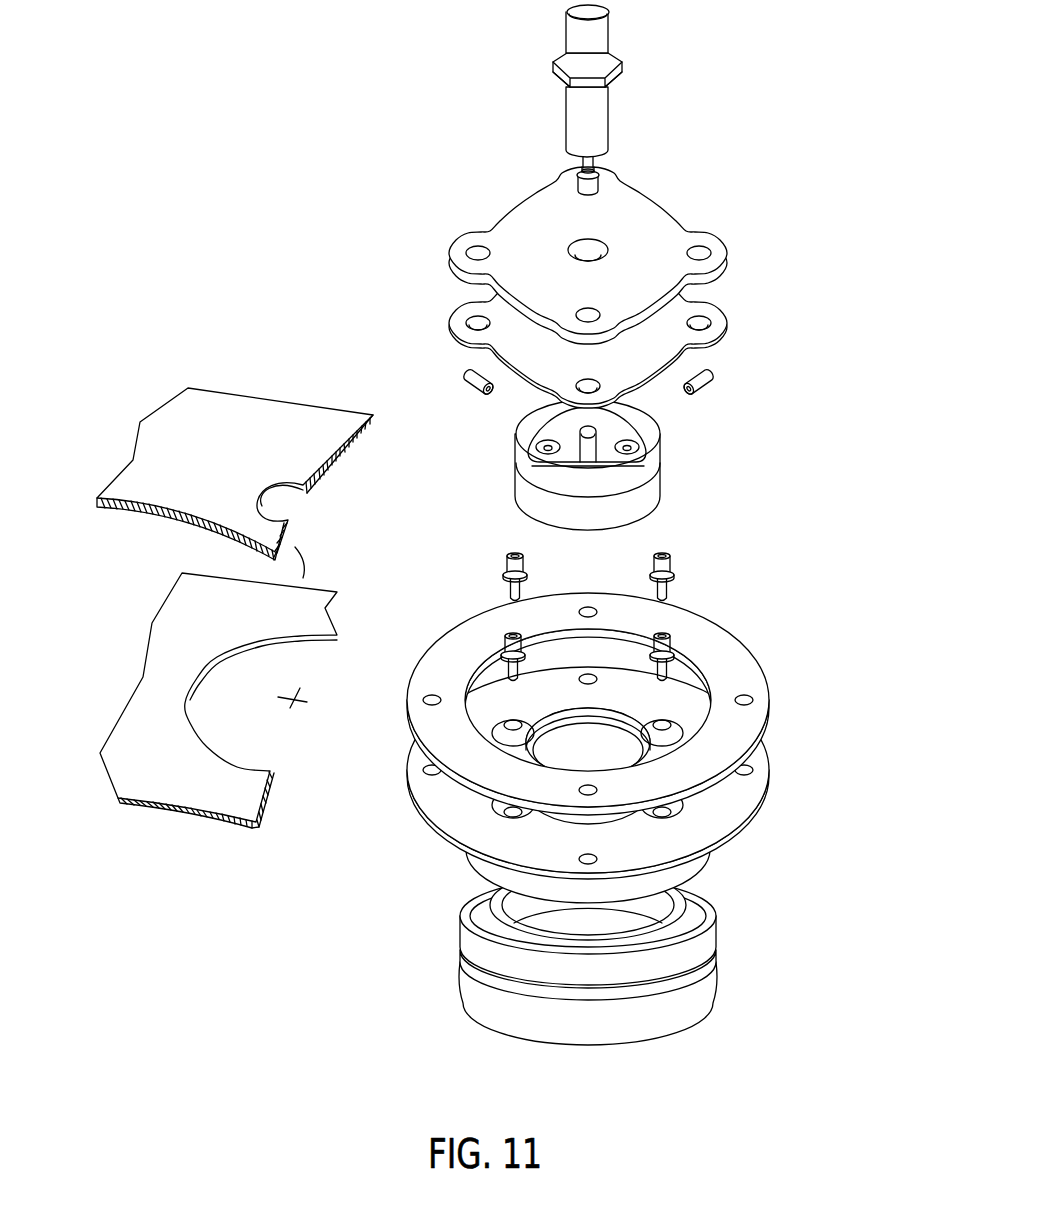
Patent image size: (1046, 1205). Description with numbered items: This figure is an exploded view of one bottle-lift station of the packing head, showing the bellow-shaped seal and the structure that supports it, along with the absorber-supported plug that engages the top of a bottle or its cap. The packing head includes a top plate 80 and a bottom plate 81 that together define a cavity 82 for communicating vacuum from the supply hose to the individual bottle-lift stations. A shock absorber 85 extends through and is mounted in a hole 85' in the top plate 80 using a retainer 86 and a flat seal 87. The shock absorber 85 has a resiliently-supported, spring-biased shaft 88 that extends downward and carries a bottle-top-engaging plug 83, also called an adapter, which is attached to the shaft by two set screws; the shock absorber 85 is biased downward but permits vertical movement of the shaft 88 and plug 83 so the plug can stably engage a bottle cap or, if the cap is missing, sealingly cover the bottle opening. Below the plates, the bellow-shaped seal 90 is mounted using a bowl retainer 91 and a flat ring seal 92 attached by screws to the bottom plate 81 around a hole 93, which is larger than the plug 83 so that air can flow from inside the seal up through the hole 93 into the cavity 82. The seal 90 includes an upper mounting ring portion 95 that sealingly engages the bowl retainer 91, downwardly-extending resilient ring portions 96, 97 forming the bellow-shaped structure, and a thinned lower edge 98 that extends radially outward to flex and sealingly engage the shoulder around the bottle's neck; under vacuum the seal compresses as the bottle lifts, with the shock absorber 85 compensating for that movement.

The top plate 80 is at (210, 456).
The bottom plate 81 is at (170, 754).
The cavity 82 is at (305, 562).
The bottle-top-engaging plug 83 is at (655, 482).
The shock absorber 85 is at (615, 86).
The hole 85' is at (283, 418).
The retainer 86 is at (668, 218).
The flat seal 87 is at (722, 318).
The shaft 88 is at (600, 175).
The bellow-shaped seal 90 is at (457, 967).
The bowl retainer 91 is at (750, 790).
The flat ring seal 92 is at (710, 635).
The hole 93 is at (298, 700).
The upper mounting ring portion 95 is at (686, 902).
The resilient ring portion 96 is at (718, 940).
The resilient ring portion 97 is at (697, 985).
The lower edge 98 is at (660, 1030).